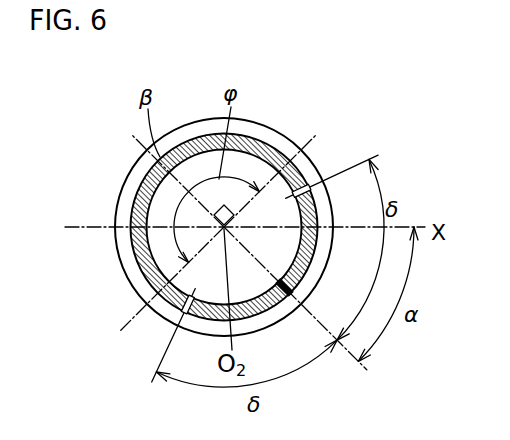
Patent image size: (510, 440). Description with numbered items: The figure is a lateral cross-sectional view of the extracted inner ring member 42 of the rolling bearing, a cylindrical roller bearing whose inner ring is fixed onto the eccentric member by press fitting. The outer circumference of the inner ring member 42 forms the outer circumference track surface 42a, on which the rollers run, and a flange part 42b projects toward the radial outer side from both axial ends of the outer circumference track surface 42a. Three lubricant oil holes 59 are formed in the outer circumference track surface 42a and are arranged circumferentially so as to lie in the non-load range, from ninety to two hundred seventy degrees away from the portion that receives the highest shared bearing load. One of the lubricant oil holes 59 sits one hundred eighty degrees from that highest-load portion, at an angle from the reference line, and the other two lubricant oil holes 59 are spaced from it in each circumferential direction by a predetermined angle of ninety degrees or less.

The inner ring member 42 is at (118, 202).
The outer circumference track surface 42a is at (273, 150).
The flange part 42b is at (186, 131).
The lubricant oil holes 59 is at (308, 191).